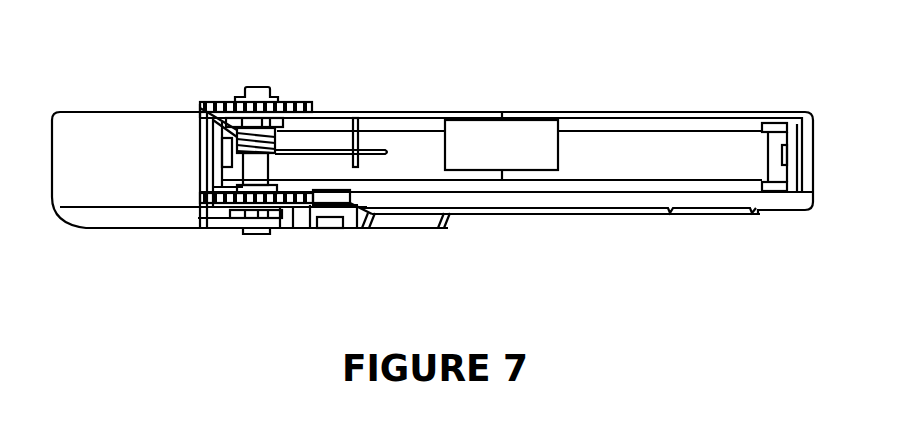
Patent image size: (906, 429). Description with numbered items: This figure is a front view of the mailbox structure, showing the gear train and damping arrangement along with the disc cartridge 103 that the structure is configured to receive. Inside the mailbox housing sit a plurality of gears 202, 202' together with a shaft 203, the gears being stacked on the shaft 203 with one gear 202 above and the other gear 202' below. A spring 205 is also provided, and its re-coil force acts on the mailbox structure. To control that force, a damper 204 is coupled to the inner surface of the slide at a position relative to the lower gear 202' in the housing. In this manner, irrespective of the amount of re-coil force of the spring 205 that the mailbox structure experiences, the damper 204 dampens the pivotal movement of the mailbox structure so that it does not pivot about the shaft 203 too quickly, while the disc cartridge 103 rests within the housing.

The disc cartridge 103 is at (682, 148).
The gear 202 is at (266, 123).
The gear 202' is at (285, 242).
The shaft 203 is at (253, 86).
The damper 204 is at (347, 198).
The spring 205 is at (200, 108).